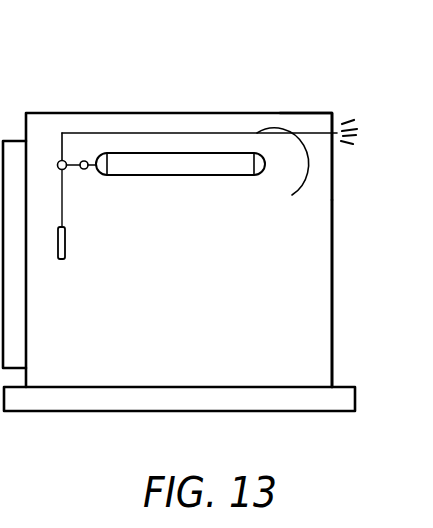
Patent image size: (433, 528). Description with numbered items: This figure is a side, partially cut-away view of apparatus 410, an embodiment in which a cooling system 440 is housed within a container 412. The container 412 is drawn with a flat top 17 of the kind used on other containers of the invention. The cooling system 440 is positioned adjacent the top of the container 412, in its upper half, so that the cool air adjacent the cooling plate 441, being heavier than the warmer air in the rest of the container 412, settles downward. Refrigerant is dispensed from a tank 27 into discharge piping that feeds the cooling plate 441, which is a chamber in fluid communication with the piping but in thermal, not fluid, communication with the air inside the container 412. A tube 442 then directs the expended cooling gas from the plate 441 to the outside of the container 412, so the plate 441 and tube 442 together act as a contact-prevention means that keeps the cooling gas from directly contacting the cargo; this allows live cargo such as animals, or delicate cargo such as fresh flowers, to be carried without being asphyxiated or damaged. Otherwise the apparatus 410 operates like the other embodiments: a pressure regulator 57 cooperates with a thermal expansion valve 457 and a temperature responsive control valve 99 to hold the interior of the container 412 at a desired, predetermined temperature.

The flat top 17 is at (305, 112).
The tank 27 is at (132, 172).
The pressure regulator 57 is at (65, 153).
The temperature responsive control valve 99 is at (66, 240).
The apparatus 410 is at (337, 188).
The container 412 is at (333, 308).
The cooling system 440 is at (235, 179).
The cooling plate 441 is at (286, 178).
The tube 442 is at (308, 130).
The thermal expansion valve 457 is at (88, 150).